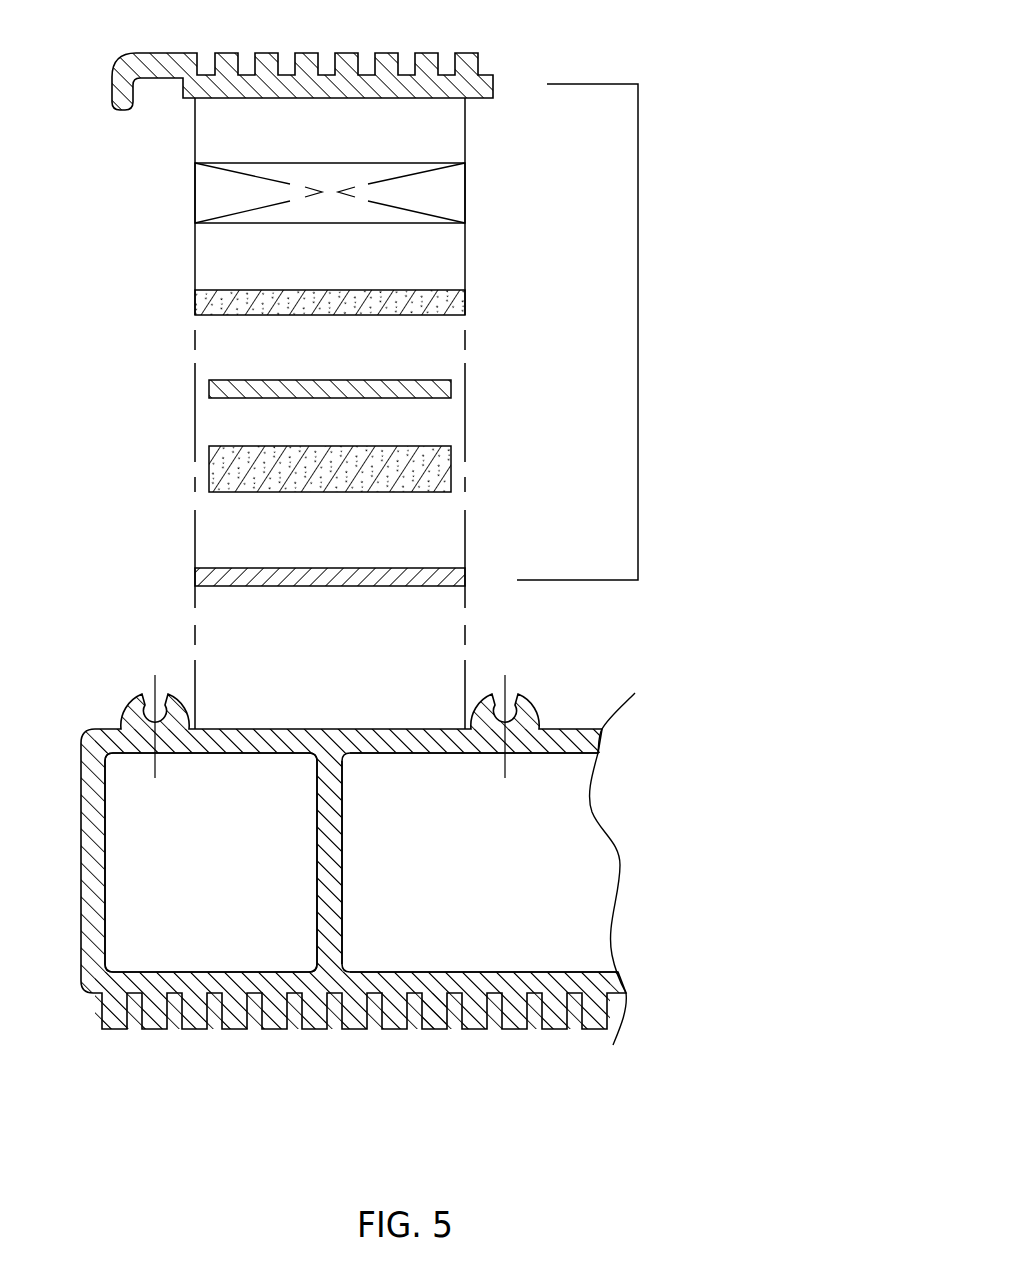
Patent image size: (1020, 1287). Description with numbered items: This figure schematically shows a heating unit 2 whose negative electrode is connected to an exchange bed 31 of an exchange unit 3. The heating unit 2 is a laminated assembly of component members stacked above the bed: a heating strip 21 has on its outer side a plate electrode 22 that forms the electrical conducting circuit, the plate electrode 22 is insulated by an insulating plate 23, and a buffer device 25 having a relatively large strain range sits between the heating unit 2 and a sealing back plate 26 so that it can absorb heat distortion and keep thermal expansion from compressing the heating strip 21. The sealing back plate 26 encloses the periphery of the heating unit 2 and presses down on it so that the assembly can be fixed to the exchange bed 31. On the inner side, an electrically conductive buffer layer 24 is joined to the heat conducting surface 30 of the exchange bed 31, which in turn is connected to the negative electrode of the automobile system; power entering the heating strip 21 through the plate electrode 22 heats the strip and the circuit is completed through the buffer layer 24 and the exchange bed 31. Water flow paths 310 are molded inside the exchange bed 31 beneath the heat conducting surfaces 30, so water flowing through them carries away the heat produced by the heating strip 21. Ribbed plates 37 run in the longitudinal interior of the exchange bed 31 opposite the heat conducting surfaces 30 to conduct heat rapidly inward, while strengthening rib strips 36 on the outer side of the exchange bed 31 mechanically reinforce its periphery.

The heating unit 2 is at (647, 313).
The heating strip 21 is at (212, 472).
The plate electrode 22 is at (452, 388).
The insulating plate 23 is at (198, 305).
The buffer layer 24 is at (455, 580).
The buffer device 25 is at (208, 195).
The sealing back plate 26 is at (493, 88).
The exchange unit 3 is at (650, 710).
The heat conducting surface 30 is at (328, 729).
The exchange bed 31 is at (193, 1072).
The strengthening rib strips 36 is at (438, 1022).
The ribbed plates 37 is at (321, 893).
The water flow paths 310 is at (128, 792).